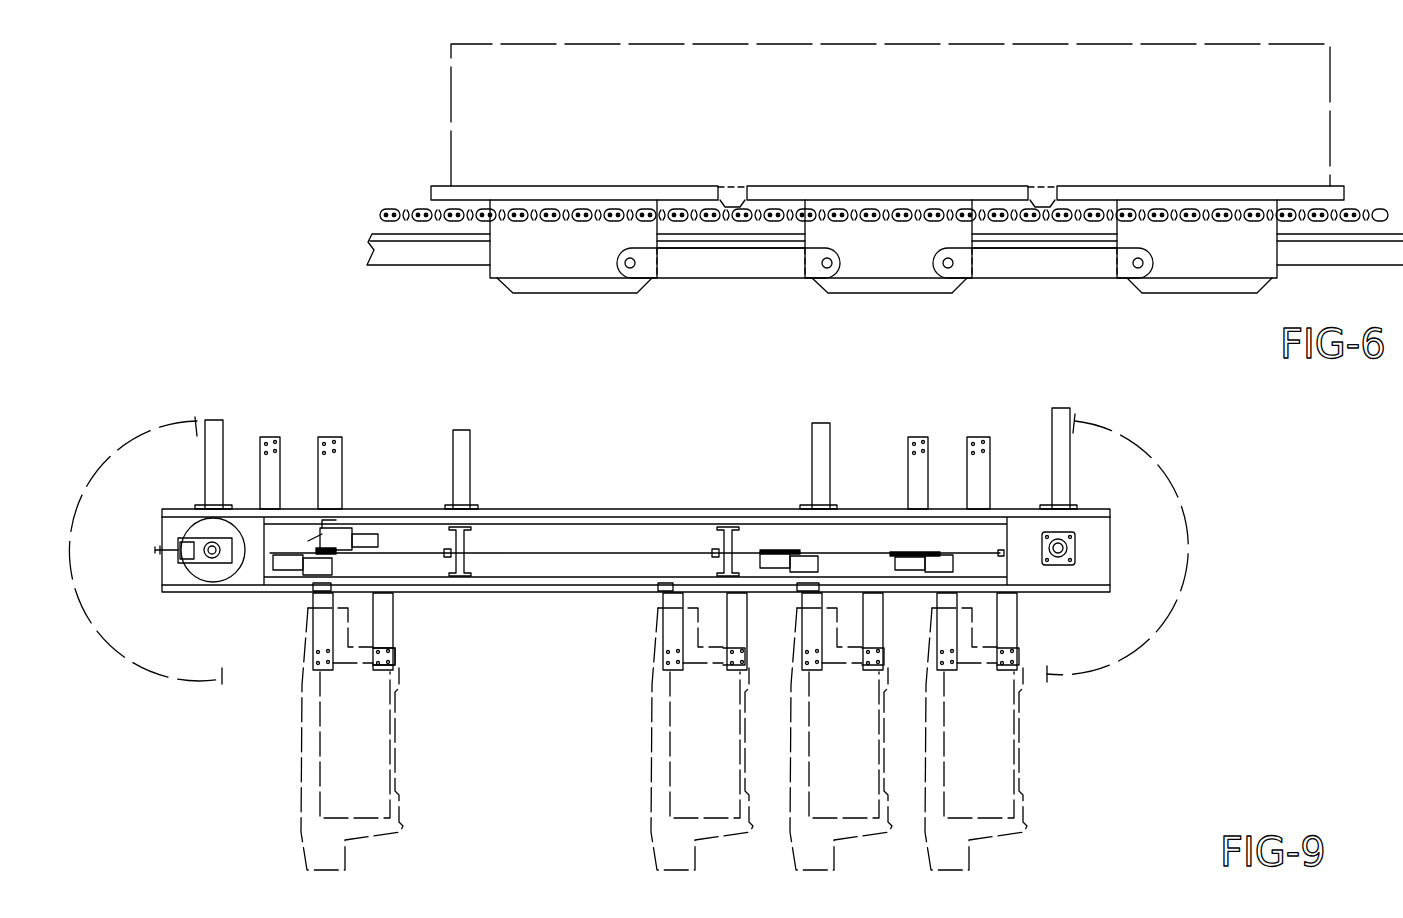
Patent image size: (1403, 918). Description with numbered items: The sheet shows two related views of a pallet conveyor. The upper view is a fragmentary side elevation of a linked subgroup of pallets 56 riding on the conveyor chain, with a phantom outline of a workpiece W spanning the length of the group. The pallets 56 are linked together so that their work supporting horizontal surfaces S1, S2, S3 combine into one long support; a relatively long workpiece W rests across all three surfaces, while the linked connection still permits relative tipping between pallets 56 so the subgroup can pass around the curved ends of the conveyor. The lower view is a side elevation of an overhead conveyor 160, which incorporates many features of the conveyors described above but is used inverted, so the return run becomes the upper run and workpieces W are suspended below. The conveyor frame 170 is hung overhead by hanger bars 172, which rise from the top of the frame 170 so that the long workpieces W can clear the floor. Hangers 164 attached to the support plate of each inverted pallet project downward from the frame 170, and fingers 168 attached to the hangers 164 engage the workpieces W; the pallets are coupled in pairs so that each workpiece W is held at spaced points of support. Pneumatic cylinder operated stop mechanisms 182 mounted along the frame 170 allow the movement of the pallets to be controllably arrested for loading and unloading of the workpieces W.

In FIG. 6, the pallet 56 is at (1356, 133).
In FIG. 6, the work supporting horizontal surface S1 is at (497, 186).
In FIG. 6, the work supporting horizontal surface S2 is at (812, 185).
In FIG. 6, the work supporting horizontal surface S3 is at (1130, 185).
In FIG. 6, the workpiece W is at (636, 106).
In FIG. 9, the workpiece W is at (300, 770).
In FIG. 9, the overhead conveyor 160 is at (632, 491).
In FIG. 9, the conveyor frame 170 is at (700, 472).
In FIG. 9, the hanger bar 172 is at (223, 441).
In FIG. 9, the hanger 164 is at (965, 450).
In FIG. 9, the pneumatic cylinder operated stop mechanism 182 is at (356, 532).
In FIG. 9, the finger 168 is at (396, 660).